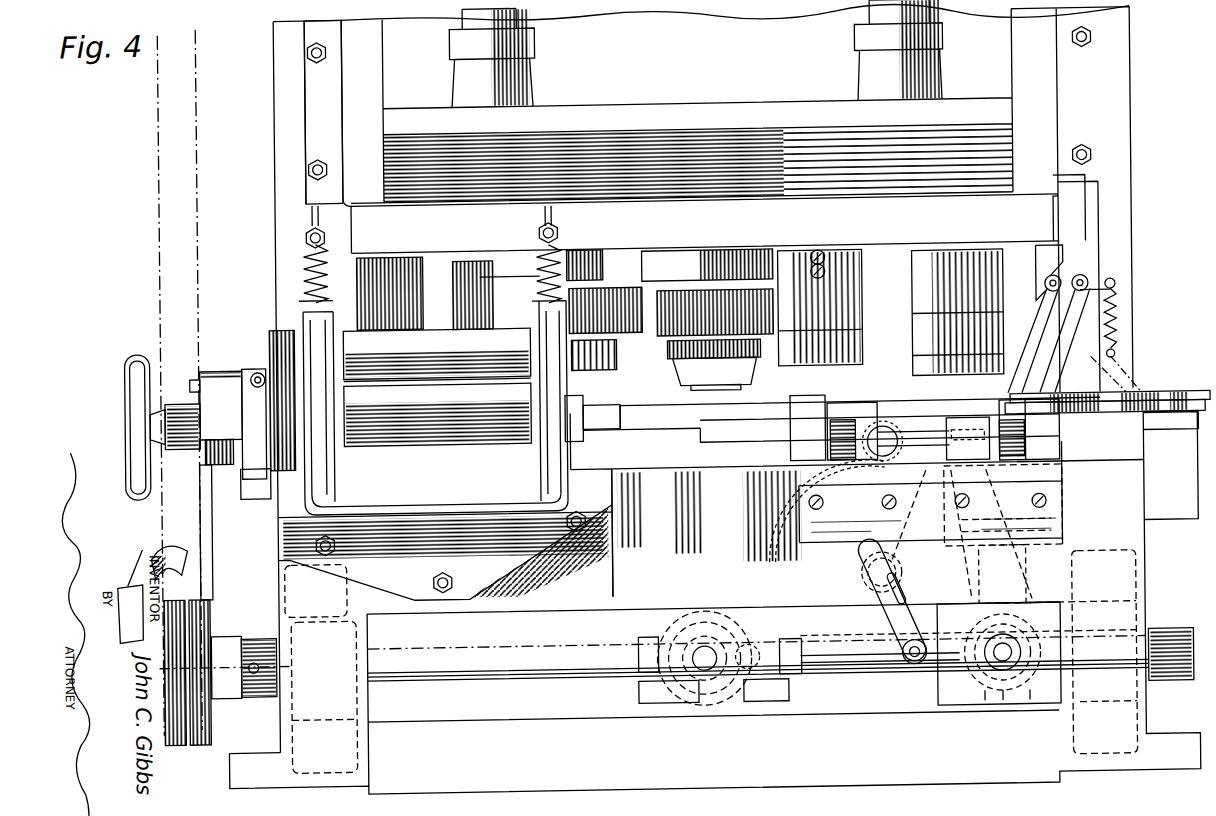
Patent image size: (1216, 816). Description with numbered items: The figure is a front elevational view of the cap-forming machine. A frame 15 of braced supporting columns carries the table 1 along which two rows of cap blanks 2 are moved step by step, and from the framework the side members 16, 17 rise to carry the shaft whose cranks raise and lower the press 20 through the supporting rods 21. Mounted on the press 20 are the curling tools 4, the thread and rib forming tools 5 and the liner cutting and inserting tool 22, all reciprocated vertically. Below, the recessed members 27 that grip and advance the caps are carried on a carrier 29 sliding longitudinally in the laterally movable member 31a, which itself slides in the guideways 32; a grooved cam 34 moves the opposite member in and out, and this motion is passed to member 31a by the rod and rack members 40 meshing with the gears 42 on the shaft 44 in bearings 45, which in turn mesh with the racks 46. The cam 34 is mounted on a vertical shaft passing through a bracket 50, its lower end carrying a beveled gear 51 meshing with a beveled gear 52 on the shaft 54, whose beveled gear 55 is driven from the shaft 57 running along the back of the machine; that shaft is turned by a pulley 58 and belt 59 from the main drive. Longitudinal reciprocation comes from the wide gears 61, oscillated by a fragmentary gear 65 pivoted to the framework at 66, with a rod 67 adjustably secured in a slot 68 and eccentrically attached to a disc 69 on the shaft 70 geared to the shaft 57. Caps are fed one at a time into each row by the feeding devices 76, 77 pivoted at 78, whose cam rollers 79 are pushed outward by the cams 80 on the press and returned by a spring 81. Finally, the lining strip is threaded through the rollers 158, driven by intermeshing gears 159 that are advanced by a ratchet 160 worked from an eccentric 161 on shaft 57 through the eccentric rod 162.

The table 1 is at (444, 404).
The cap blanks 2 is at (1182, 404).
The curling tools 4 is at (916, 336).
The thread and rib forming tools 5 is at (668, 366).
The frame 15 is at (277, 569).
The side member 16 is at (302, 242).
The side member 17 is at (1118, 194).
The press 20 is at (643, 105).
The supporting rods 21 is at (515, 83).
The liner cutting and inserting tool 22 is at (473, 297).
The recessed members 27 is at (612, 410).
The carrier 29 is at (655, 412).
The member 31a is at (705, 441).
The guideways 32 is at (792, 424).
The grooved cam 34 is at (951, 446).
The rod and rack members 40 is at (806, 482).
The gears 42 is at (846, 434).
The shaft 44 is at (926, 436).
The bearings 45 is at (885, 426).
The racks 46 is at (839, 424).
The bracket 50 is at (1067, 556).
The beveled gear 51 is at (975, 629).
The beveled gear 52 is at (972, 697).
The shaft 54 is at (1002, 702).
The beveled gear 55 is at (1030, 697).
The shaft 57 is at (570, 681).
The pulley 58 is at (210, 610).
The belt 59 is at (161, 262).
The gears 61 is at (811, 474).
The fragmentary gear 65 is at (816, 566).
The pivot 66 is at (862, 589).
The rod 67 is at (845, 684).
The slot 68 is at (913, 609).
The disc 69 is at (750, 692).
The shaft 70 is at (687, 702).
The cap feeding device 76 is at (1086, 329).
The cap feeding device 77 is at (1046, 361).
The pivot 78 is at (1087, 293).
The cam rollers 79 is at (1061, 286).
The cams 80 is at (1065, 260).
The spring 81 is at (1102, 334).
The rollers 158 is at (437, 387).
The intermeshing gears 159 is at (275, 327).
The ratchet 160 is at (210, 458).
The eccentric 161 is at (141, 559).
The eccentric rod 162 is at (179, 567).